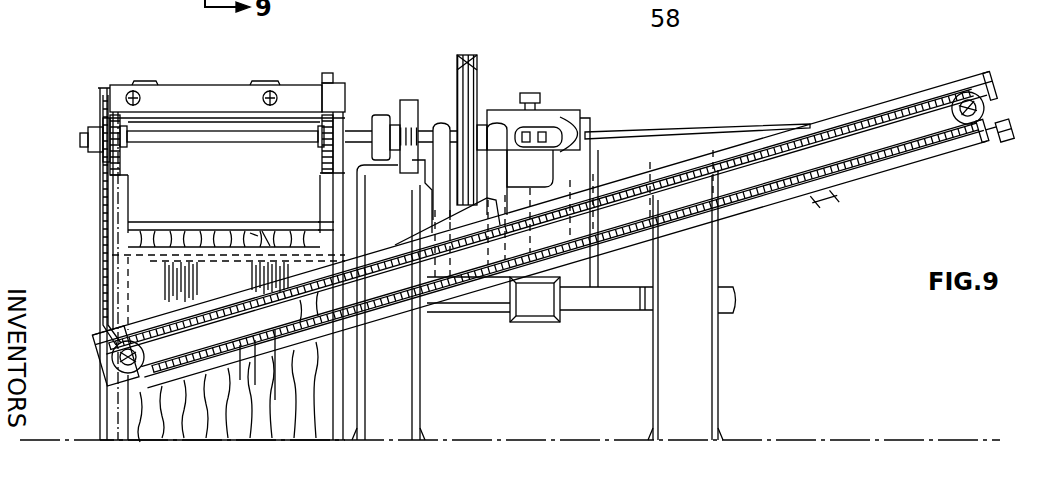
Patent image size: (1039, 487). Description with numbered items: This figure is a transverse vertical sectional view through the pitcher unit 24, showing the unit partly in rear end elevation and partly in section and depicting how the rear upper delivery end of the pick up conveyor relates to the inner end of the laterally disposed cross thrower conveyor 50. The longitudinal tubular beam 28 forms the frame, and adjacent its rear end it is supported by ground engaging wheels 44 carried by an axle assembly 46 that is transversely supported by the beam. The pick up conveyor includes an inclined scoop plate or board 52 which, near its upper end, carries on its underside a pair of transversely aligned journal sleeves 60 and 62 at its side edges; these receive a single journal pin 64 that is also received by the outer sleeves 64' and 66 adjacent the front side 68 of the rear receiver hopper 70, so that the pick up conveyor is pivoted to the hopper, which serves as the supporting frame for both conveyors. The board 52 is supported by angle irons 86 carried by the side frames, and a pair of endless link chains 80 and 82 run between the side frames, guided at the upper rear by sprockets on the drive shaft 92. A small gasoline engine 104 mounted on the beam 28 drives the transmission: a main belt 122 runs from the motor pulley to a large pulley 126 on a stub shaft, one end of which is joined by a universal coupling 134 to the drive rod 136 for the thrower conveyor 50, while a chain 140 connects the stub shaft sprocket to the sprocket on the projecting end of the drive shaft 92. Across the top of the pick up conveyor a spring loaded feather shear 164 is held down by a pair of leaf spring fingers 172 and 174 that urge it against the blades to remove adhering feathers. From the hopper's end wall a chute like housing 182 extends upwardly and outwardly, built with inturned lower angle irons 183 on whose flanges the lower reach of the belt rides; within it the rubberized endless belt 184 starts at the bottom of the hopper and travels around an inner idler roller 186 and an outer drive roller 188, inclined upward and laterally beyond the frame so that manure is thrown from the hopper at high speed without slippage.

The pitcher unit 24 is at (586, 122).
The longitudinal tubular beam 28 is at (532, 325).
The ground engaging wheels 44 is at (416, 408).
The axle assembly 46 is at (598, 312).
The cross thrower conveyor 50 is at (554, 242).
The scoop plate or board 52 is at (236, 230).
The journal sleeve 60 is at (160, 226).
The journal sleeve 62 is at (290, 230).
The journal pin 64 is at (226, 282).
The outer sleeve 64' is at (192, 292).
The outer sleeve 66 is at (320, 226).
The front side 68 is at (152, 286).
The rear receiver hopper 70 is at (94, 229).
The endless link chain 80 is at (108, 154).
The endless link chain 82 is at (345, 120).
The angle irons 86 is at (112, 410).
The drive shaft 92 is at (212, 145).
The gasoline engine 104 is at (505, 108).
The main belt 122 is at (465, 55).
The large pulley 126 is at (480, 64).
The universal coupling 134 is at (563, 118).
The drive rod 136 is at (668, 130).
The chain 140 is at (410, 100).
The spring loaded feather shear 164 is at (192, 90).
The leaf spring finger 172 is at (152, 80).
The leaf spring finger 174 is at (262, 82).
The chute like housing 182 is at (277, 332).
The lower angle irons 183 is at (564, 247).
The rubberized endless belt 184 is at (540, 219).
The inner idler roller 186 is at (110, 366).
The outer drive roller 188 is at (1000, 132).